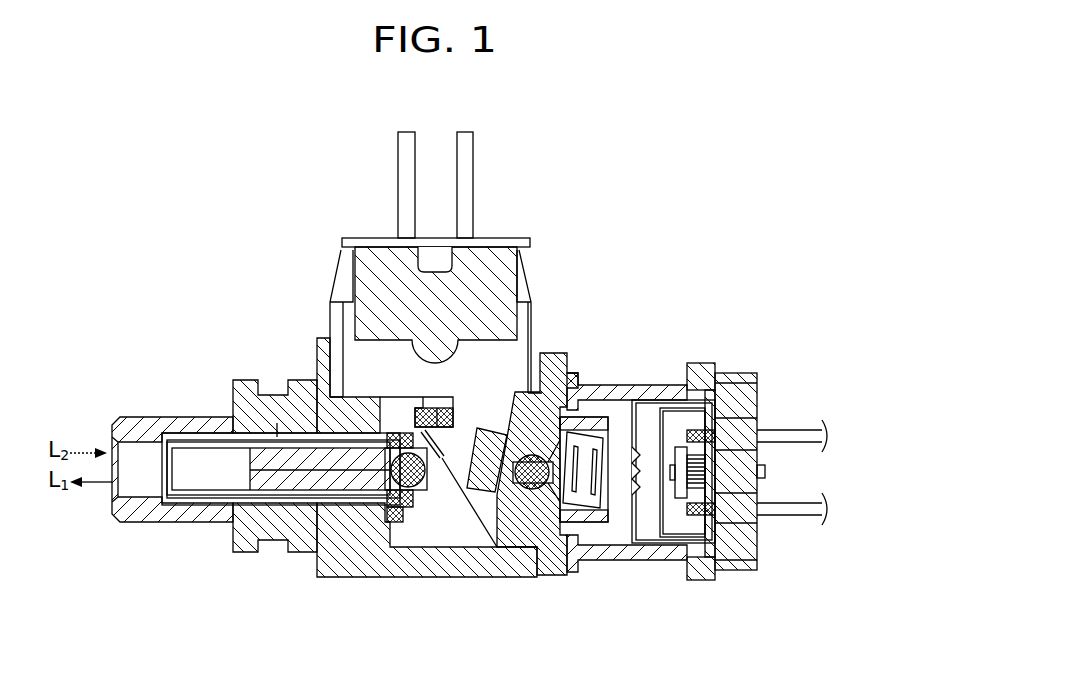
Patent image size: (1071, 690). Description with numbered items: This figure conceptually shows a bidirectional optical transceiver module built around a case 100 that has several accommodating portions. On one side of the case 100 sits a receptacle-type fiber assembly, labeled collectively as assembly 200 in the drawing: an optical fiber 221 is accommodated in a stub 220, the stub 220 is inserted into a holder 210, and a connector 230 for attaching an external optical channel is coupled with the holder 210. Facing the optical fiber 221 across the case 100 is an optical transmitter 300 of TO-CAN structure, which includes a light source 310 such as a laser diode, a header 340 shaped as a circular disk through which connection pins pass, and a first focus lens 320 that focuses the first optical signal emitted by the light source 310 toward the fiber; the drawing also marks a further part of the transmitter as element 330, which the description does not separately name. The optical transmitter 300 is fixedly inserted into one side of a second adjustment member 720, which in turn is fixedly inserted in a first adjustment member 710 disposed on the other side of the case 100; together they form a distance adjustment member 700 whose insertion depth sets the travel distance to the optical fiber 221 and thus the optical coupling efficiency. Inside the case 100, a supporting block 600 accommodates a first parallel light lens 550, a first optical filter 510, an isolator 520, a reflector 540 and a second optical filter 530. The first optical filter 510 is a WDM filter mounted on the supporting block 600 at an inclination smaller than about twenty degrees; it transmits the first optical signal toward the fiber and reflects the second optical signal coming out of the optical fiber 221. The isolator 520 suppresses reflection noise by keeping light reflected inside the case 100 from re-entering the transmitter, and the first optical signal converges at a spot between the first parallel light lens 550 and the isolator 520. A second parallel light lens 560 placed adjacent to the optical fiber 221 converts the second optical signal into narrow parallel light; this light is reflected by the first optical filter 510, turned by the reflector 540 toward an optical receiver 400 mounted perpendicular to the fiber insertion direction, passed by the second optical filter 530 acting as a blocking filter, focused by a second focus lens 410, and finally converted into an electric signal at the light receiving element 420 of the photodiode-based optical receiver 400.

The case 100 is at (526, 562).
The inlet connection part 200 is at (256, 526).
The holder 210 is at (348, 512).
The stub 220 is at (283, 500).
The optical fiber 221 is at (292, 485).
The connector 230 is at (172, 523).
The optical transmitter 300 is at (697, 512).
The light source 310 is at (742, 553).
The first focus lens 320 is at (633, 553).
The connector flange 330 is at (686, 545).
The header 340 is at (757, 566).
The optical receiver 400 is at (409, 264).
The second focus lens 410 is at (341, 290).
The light receiving element 420 is at (416, 258).
The first optical filter 510 is at (482, 500).
The isolator 520 is at (555, 562).
The second optical filter 530 is at (438, 404).
The reflector 540 is at (433, 488).
The first parallel light lens 550 is at (542, 456).
The second parallel light lens 560 is at (400, 525).
The supporting block 600 is at (452, 398).
The distance adjustment member 700 is at (693, 407).
The first adjustment member 710 is at (652, 383).
The second adjustment member 720 is at (710, 368).